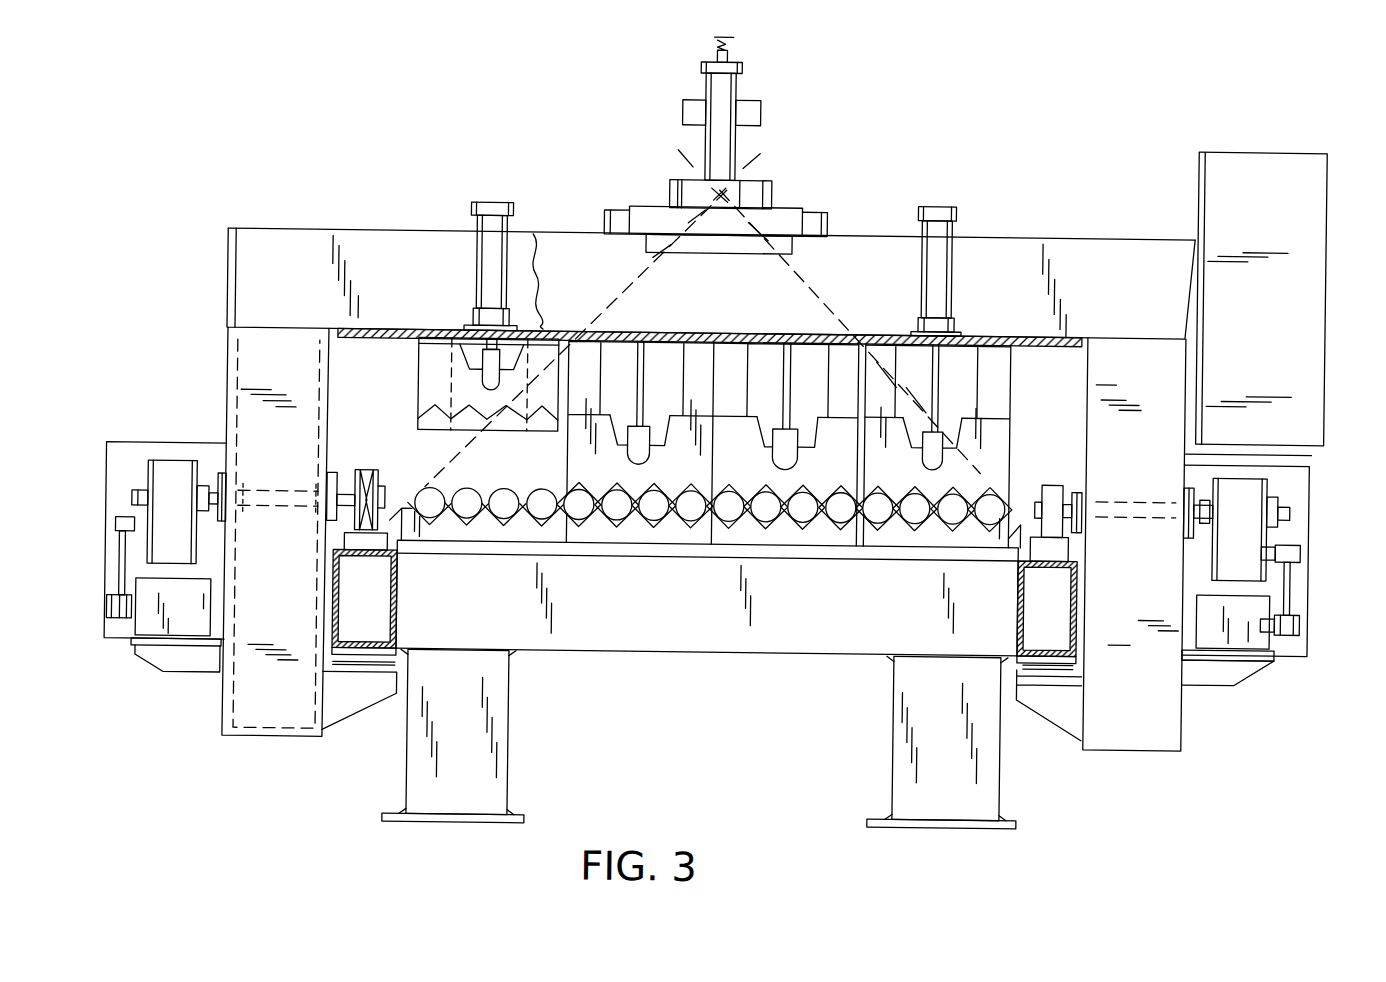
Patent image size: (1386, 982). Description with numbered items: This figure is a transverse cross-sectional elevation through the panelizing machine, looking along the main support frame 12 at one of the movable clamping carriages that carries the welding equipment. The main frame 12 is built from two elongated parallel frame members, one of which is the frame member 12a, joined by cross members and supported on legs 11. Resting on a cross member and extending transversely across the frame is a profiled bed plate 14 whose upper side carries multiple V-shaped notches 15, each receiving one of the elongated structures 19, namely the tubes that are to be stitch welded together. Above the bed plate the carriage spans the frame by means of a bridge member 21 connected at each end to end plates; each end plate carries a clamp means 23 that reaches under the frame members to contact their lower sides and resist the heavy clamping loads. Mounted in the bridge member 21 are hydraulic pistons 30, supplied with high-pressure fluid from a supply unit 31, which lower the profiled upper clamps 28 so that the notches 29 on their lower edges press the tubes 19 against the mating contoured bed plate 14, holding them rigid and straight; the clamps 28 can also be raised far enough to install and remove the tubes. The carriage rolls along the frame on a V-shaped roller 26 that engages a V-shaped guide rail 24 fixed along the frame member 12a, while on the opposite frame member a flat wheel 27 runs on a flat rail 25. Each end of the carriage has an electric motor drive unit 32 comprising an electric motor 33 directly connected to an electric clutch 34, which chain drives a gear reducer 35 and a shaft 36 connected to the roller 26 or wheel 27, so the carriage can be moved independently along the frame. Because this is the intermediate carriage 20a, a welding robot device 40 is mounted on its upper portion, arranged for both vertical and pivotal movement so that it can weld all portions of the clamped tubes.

The legs 11 is at (511, 762).
The main support frame 12 is at (668, 654).
The frame member 12a is at (398, 620).
The profiled bed plate 14 is at (563, 537).
The V-shaped notches 15 is at (618, 524).
The elongated structures 19 is at (838, 532).
The intermediate carriage 20a is at (580, 232).
The bridge member 21 is at (1081, 241).
The clamp means 23 is at (355, 714).
The V-shaped guide rail 24 is at (364, 538).
The flat rail 25 is at (1040, 560).
The V-shaped roller 26 is at (361, 476).
The flat wheel 27 is at (1055, 524).
The profiled upper clamp 28 is at (426, 370).
The notches 29 is at (496, 430).
The hydraulic piston 30 is at (488, 205).
The supply unit 31 is at (1266, 148).
The electric motor drive unit 32 is at (182, 447).
The electric motor 33 is at (153, 660).
The electric clutch 34 is at (118, 630).
The gear reducer 35 is at (167, 472).
The shaft 36 is at (208, 518).
The welding robot device 40 is at (738, 89).